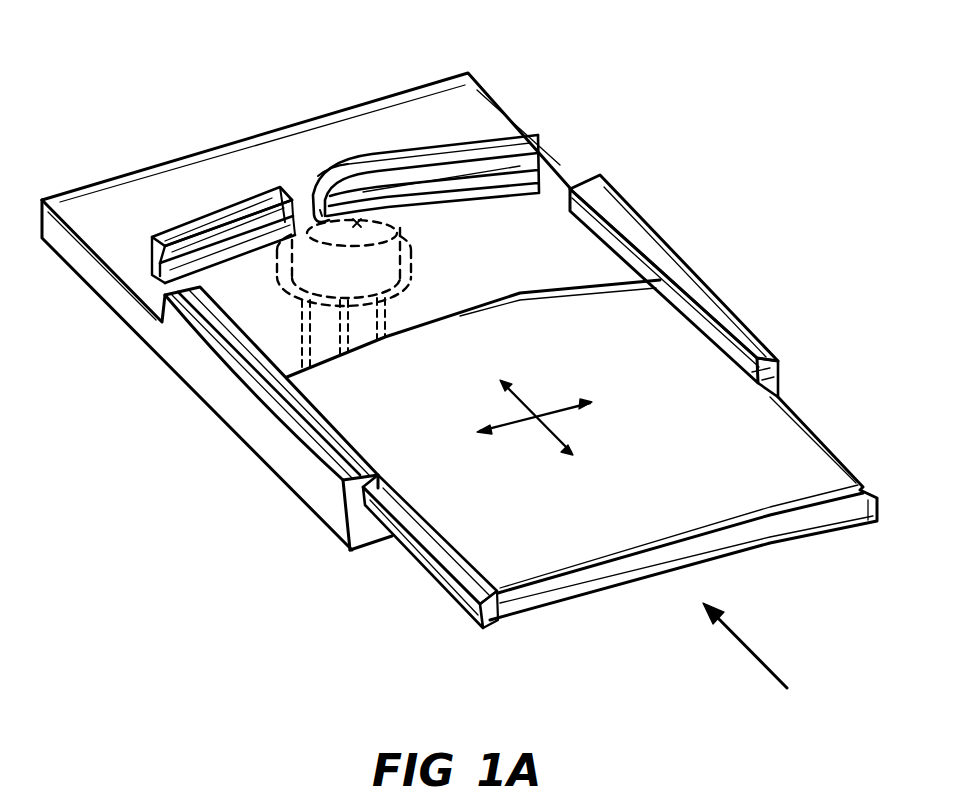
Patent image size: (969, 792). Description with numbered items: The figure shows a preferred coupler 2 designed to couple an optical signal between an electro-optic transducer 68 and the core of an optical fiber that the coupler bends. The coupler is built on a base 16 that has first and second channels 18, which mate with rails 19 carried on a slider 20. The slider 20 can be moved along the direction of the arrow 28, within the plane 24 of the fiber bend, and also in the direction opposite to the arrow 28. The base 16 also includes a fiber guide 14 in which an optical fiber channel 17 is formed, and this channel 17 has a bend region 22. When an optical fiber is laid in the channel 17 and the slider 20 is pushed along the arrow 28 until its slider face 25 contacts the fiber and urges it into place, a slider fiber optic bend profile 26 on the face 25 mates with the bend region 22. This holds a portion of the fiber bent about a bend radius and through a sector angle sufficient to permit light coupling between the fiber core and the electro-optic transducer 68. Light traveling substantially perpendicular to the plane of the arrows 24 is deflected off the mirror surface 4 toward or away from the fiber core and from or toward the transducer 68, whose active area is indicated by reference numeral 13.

The coupler 2 is at (650, 80).
The mirror surface 4 is at (313, 187).
The active area 13 is at (397, 222).
The fiber guide 14 is at (497, 143).
The base 16 is at (137, 312).
The optical fiber channel 17 is at (565, 168).
The channels 18 is at (756, 362).
The rails 19 is at (865, 490).
The slider 20 is at (563, 593).
The bend region 22 is at (360, 160).
The plane of the fiber bend 24 is at (550, 432).
The slider face 25 is at (318, 372).
The slider fiber optic bend profile 26 is at (455, 300).
The arrow 28 is at (748, 655).
The electro-optic transducer 68 is at (316, 397).